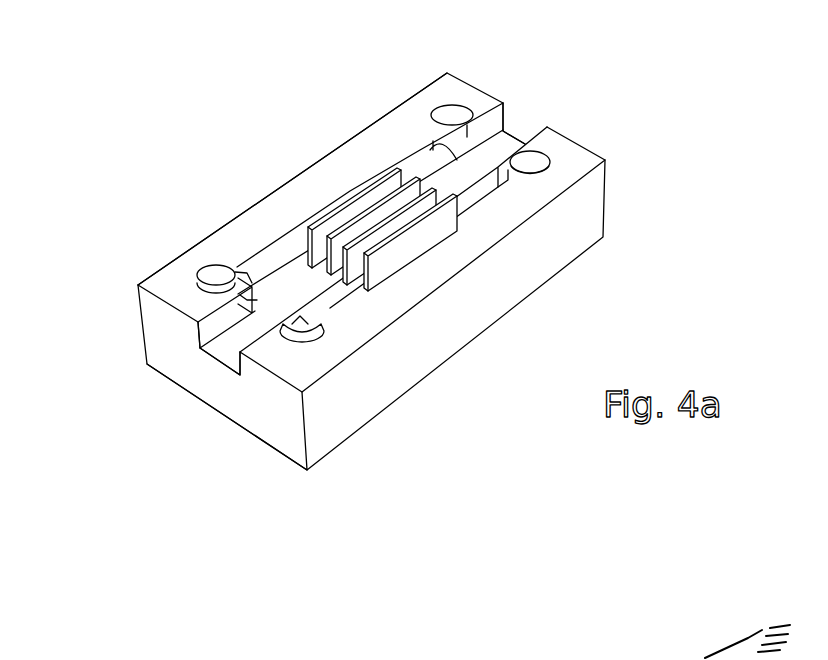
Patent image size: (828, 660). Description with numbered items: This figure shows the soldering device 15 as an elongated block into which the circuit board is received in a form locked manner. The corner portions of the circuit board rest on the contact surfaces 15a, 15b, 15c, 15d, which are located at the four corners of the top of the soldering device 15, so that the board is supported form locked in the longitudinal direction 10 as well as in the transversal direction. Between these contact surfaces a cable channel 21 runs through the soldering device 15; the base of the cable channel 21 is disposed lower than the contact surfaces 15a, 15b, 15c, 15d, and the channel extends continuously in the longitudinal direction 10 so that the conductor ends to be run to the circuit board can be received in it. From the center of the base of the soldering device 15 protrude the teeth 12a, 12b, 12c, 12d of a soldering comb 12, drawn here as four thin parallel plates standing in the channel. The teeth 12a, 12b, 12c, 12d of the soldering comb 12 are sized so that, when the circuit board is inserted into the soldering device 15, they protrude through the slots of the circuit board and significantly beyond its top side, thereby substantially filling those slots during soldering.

The longitudinal direction 10 is at (543, 377).
The soldering comb 12 is at (461, 168).
The tooth of the soldering comb 12a is at (360, 195).
The tooth of the soldering comb 12b is at (405, 190).
The tooth of the soldering comb 12c is at (358, 262).
The tooth of the soldering comb 12d is at (370, 258).
The soldering device 15 is at (262, 201).
The contact surface 15a is at (220, 283).
The contact surface 15b is at (298, 337).
The contact surface 15c is at (530, 167).
The contact surface 15d is at (452, 123).
The cable channel 21 is at (227, 343).